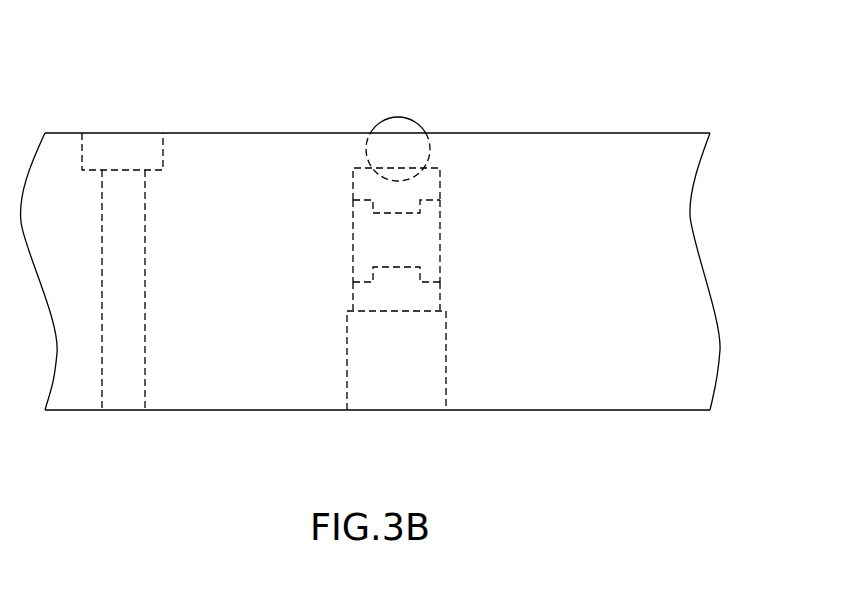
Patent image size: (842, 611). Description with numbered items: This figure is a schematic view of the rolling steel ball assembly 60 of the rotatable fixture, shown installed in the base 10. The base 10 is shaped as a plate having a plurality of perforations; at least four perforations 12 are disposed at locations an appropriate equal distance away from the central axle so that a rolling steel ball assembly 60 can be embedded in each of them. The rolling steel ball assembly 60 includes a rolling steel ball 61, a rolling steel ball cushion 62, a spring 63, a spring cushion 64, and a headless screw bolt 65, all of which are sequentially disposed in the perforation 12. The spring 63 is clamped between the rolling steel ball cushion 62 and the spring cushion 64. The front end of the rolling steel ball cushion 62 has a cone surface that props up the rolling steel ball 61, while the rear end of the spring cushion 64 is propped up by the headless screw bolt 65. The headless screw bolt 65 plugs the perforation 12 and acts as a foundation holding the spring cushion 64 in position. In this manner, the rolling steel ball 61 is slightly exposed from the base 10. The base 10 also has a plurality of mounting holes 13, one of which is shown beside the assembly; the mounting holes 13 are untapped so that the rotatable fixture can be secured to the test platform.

The base 10 is at (707, 282).
The perforation 12 is at (447, 380).
The mounting hole 13 is at (145, 374).
The rolling steel ball assembly 60 is at (425, 118).
The rolling steel ball 61 is at (380, 118).
The rolling steel ball cushion 62 is at (365, 188).
The spring 63 is at (365, 238).
The spring cushion 64 is at (365, 293).
The headless screw bolt 65 is at (365, 371).